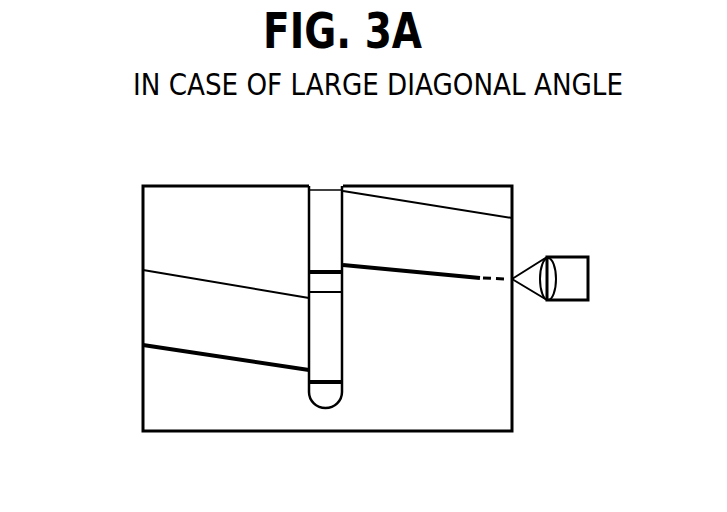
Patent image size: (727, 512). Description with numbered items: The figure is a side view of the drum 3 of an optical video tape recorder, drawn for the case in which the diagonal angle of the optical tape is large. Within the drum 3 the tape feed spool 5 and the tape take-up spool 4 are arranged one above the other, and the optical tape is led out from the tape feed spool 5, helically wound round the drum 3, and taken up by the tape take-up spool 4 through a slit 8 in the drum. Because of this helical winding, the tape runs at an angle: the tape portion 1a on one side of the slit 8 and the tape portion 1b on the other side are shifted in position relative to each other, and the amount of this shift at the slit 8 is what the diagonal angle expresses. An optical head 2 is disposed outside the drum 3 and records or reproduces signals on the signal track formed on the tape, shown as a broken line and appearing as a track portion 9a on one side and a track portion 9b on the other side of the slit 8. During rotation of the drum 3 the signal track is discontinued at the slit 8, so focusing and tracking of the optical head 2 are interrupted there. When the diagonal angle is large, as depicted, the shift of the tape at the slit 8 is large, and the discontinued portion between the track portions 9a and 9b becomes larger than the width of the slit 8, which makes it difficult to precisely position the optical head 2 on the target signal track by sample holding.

The optical tape 1a is at (452, 218).
The optical tape 1b is at (188, 333).
The optical head 2 is at (568, 270).
The drum 3 is at (499, 187).
The tape take-up spool 4 is at (323, 211).
The tape feed spool 5 is at (326, 333).
The slit 8 is at (325, 397).
The signal track 9a is at (492, 284).
The signal track 9b is at (150, 275).